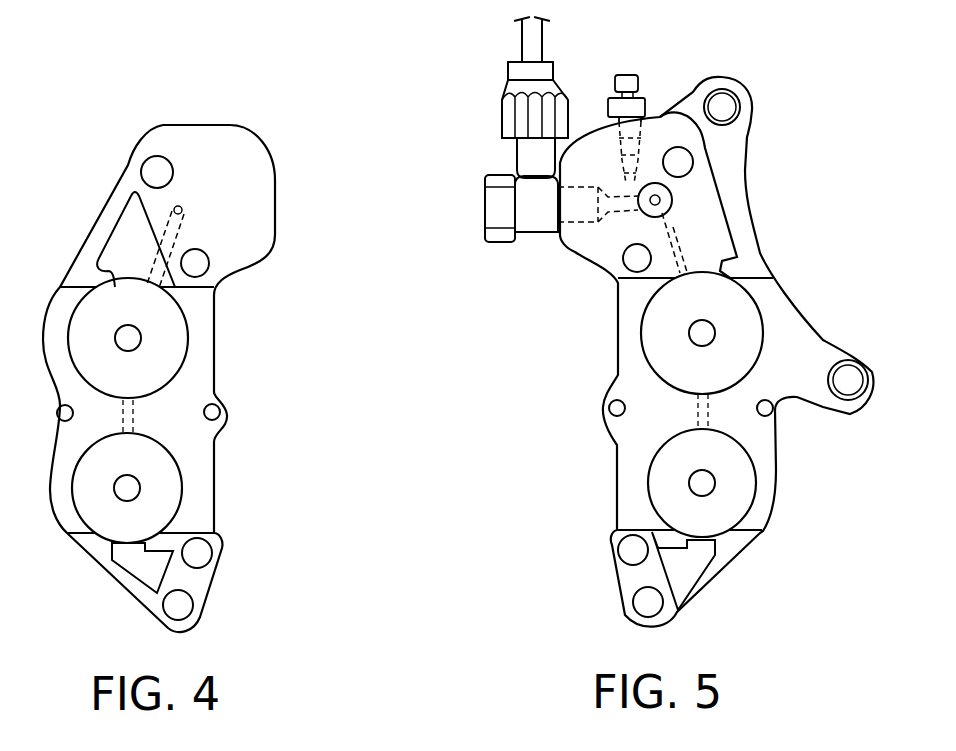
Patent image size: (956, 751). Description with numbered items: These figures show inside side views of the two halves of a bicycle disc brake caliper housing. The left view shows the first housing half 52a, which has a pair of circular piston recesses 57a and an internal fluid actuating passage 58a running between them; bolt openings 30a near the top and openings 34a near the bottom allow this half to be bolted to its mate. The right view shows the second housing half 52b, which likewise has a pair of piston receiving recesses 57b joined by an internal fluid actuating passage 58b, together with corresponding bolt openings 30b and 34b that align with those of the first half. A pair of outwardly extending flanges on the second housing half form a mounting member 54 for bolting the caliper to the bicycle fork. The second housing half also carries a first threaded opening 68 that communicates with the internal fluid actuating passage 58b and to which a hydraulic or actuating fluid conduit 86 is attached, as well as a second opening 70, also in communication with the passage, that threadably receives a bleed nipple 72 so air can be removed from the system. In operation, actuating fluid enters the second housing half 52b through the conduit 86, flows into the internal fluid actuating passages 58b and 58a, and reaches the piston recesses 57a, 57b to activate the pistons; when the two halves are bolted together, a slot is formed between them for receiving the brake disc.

In FIG. 4, the first housing half 52a is at (93, 226).
In FIG. 4, the openings 30a is at (197, 256).
In FIG. 4, the internal fluid actuating passage 58a is at (145, 255).
In FIG. 4, the circular piston recesses 57a is at (152, 448).
In FIG. 4, the openings 34a is at (185, 603).
In FIG. 5, the second housing half 52b is at (760, 253).
In FIG. 5, the openings 30b is at (642, 254).
In FIG. 5, the internal fluid actuating passage 58b is at (680, 237).
In FIG. 5, the piston receiving recesses 57b is at (683, 435).
In FIG. 5, the openings 34b is at (640, 600).
In FIG. 5, the mounting member 54 is at (748, 140).
In FIG. 5, the first threaded opening 68 is at (580, 225).
In FIG. 5, the second opening 70 is at (655, 183).
In FIG. 5, the bleed nipple 72 is at (638, 78).
In FIG. 5, the actuating fluid conduit 86 is at (524, 50).